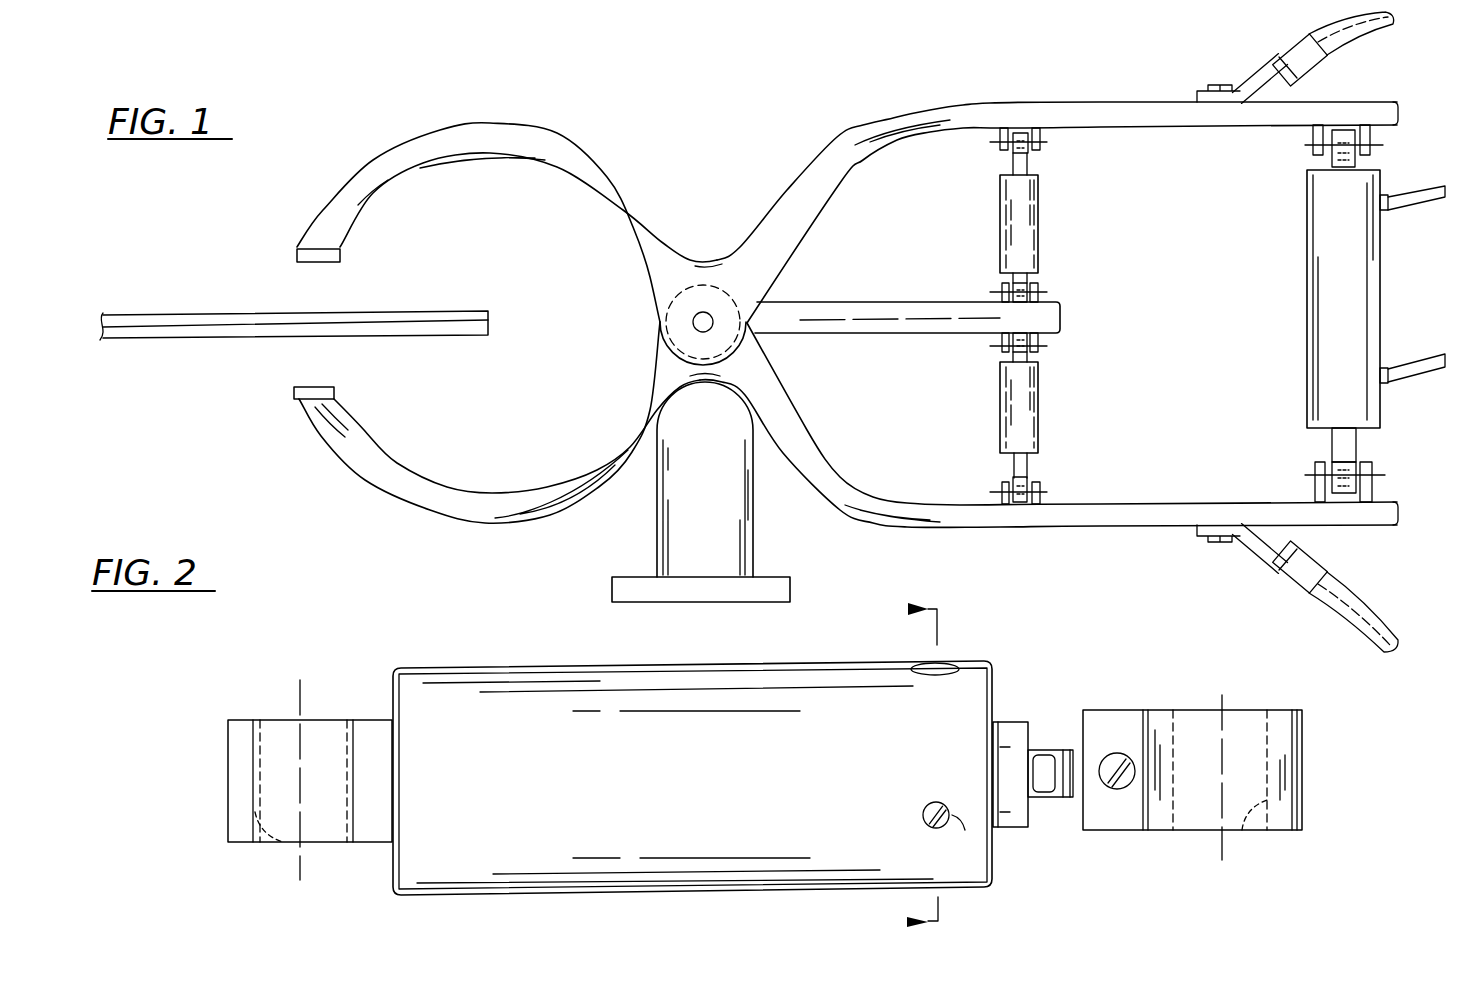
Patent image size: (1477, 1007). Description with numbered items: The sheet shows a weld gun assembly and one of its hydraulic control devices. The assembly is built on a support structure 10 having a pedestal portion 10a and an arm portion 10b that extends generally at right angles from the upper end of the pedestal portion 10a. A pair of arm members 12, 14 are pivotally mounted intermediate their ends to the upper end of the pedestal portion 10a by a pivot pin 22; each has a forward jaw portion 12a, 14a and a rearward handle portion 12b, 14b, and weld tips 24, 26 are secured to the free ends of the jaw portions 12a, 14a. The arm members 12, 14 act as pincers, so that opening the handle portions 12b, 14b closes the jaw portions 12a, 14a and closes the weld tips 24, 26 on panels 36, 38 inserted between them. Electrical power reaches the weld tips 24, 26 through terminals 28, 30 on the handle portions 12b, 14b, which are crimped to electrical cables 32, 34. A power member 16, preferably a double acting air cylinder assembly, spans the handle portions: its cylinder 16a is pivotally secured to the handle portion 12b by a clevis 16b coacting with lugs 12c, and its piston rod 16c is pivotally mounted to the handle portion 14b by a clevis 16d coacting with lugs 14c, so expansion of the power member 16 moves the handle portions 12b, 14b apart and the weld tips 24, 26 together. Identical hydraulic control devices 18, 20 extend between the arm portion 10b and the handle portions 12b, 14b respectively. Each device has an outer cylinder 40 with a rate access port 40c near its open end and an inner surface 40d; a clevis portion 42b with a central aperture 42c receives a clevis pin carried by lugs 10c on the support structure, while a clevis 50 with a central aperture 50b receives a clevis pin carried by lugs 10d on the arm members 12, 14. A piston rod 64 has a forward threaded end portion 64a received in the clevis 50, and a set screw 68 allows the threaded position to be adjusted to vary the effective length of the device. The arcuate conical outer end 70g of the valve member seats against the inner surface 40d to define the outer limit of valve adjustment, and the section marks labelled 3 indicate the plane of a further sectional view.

In FIG. 1, the support structure 10 is at (796, 426).
In FIG. 1, the pedestal portion 10a is at (722, 494).
In FIG. 1, the arm portion 10b is at (880, 305).
In FIG. 1, the lugs 10c is at (1042, 292).
In FIG. 1, the lugs 10d is at (1045, 140).
In FIG. 1, the arm member 12 is at (847, 181).
In FIG. 1, the jaw portion 12a is at (497, 122).
In FIG. 1, the handle portion 12b is at (1165, 101).
In FIG. 1, the lugs 12c is at (1312, 148).
In FIG. 1, the arm member 14 is at (848, 447).
In FIG. 1, the jaw portion 14a is at (418, 513).
In FIG. 1, the handle portion 14b is at (1135, 520).
In FIG. 1, the lugs 14c is at (1315, 468).
In FIG. 1, the power member 16 is at (1340, 311).
In FIG. 1, the cylinder 16a is at (1360, 281).
In FIG. 1, the clevis 16b is at (1345, 165).
In FIG. 1, the piston rod 16c is at (1332, 443).
In FIG. 1, the clevis 16d is at (1348, 462).
In FIG. 1, the hydraulic control device 18 is at (1070, 222).
In FIG. 2, the hydraulic control device 18 is at (780, 747).
In FIG. 1, the hydraulic control device 20 is at (1070, 405).
In FIG. 2, the hydraulic control device 20 is at (420, 642).
In FIG. 1, the pivot pin 22 is at (700, 322).
In FIG. 1, the weld tip 24 is at (298, 260).
In FIG. 1, the weld tip 26 is at (296, 394).
In FIG. 1, the terminal 28 is at (1288, 62).
In FIG. 1, the terminal 30 is at (1278, 570).
In FIG. 1, the electrical cable 32 is at (1362, 33).
In FIG. 1, the electrical cable 34 is at (1356, 618).
In FIG. 1, the panel 36 is at (192, 313).
In FIG. 1, the panel 38 is at (195, 338).
In FIG. 1, the cylinder 40 is at (1000, 225).
In FIG. 2, the cylinder 40 is at (706, 753).
In FIG. 2, the port 40c is at (952, 820).
In FIG. 2, the inner surface 40d is at (947, 663).
In FIG. 1, the clevis portion 42b is at (1012, 278).
In FIG. 2, the clevis portion 42b is at (295, 770).
In FIG. 2, the central aperture 42c is at (283, 843).
In FIG. 2, the clevis 50 is at (1222, 774).
In FIG. 2, the central aperture 50b is at (1243, 832).
In FIG. 1, the piston rod 64 is at (1028, 165).
In FIG. 2, the forward threaded end portion 64a is at (1065, 750).
In FIG. 2, the set screw 68 is at (1108, 760).
In FIG. 2, the outer end 70g is at (922, 814).
In FIG. 2, the section line FIG. 3 is at (911, 766).